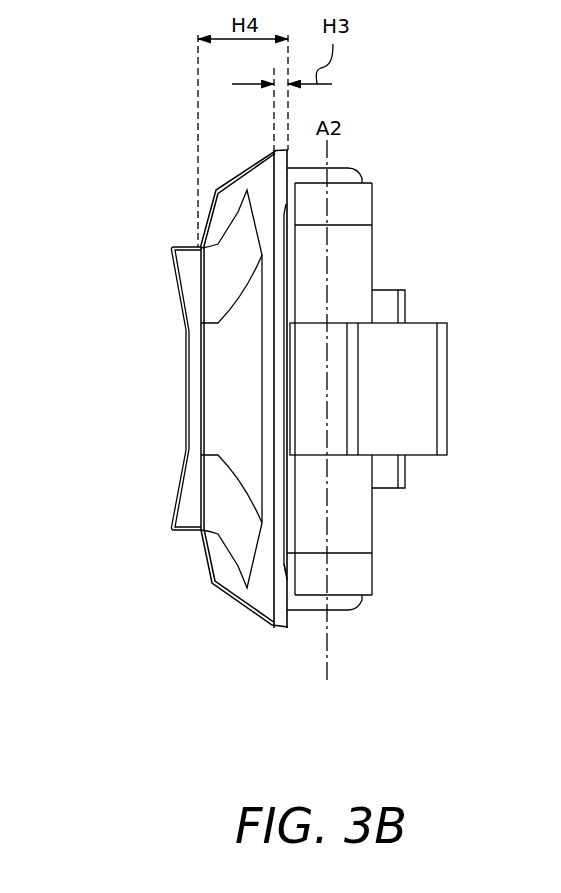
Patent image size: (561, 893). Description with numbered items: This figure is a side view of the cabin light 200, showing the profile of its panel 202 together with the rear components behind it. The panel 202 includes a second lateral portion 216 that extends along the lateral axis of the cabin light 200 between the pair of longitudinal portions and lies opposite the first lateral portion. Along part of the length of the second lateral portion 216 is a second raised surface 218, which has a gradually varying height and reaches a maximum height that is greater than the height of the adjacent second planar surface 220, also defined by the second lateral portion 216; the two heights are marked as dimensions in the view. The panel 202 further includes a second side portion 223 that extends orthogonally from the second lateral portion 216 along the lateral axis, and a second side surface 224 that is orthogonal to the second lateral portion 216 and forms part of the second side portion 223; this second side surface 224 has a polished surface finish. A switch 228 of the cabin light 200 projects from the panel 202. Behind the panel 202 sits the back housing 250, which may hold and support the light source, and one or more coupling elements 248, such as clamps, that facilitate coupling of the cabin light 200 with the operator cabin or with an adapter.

The cabin light 200 is at (170, 149).
The panel 202 is at (203, 591).
The second lateral portion 216 is at (268, 556).
The second raised surface 218 is at (232, 392).
The second planar surface 220 is at (268, 481).
The second side portion 223 is at (286, 583).
The second side surface 224 is at (285, 520).
The switch 228 is at (170, 290).
The coupling element 248 is at (422, 407).
The back housing 250 is at (353, 250).